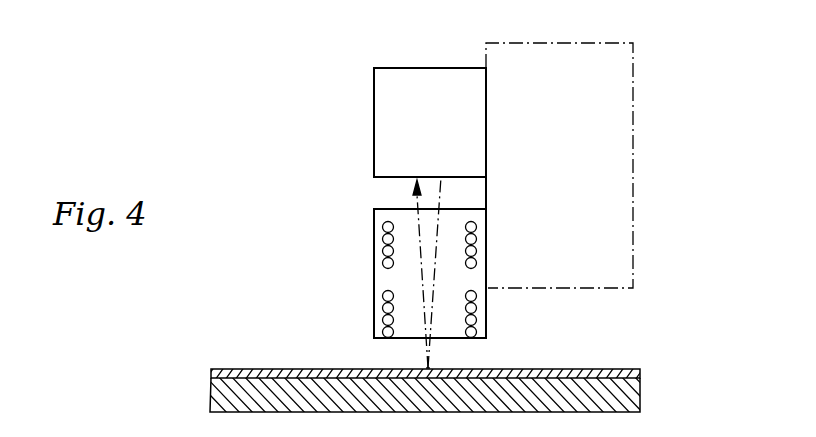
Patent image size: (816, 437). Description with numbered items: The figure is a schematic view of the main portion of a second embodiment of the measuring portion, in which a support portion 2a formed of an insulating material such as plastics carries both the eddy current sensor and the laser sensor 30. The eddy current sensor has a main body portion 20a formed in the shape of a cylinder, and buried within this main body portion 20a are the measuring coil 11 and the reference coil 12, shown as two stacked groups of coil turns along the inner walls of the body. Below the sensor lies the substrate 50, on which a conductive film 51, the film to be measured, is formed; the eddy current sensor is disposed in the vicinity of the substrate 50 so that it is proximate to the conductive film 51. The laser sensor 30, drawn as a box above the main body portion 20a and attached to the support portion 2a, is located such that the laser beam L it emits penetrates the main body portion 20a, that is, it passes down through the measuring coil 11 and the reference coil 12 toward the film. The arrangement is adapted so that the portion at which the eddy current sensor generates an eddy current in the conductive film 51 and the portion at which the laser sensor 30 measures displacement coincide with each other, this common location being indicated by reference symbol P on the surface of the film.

The support portion 2a is at (635, 67).
The laser displacement sensor 30 is at (373, 125).
The laser beam L is at (412, 203).
The reference coil 12 is at (385, 237).
The main body portion 20a is at (373, 273).
The measuring coil 11 is at (385, 318).
The coincident measuring point P is at (428, 368).
The conductive film 51 is at (641, 372).
The substrate 50 is at (641, 395).